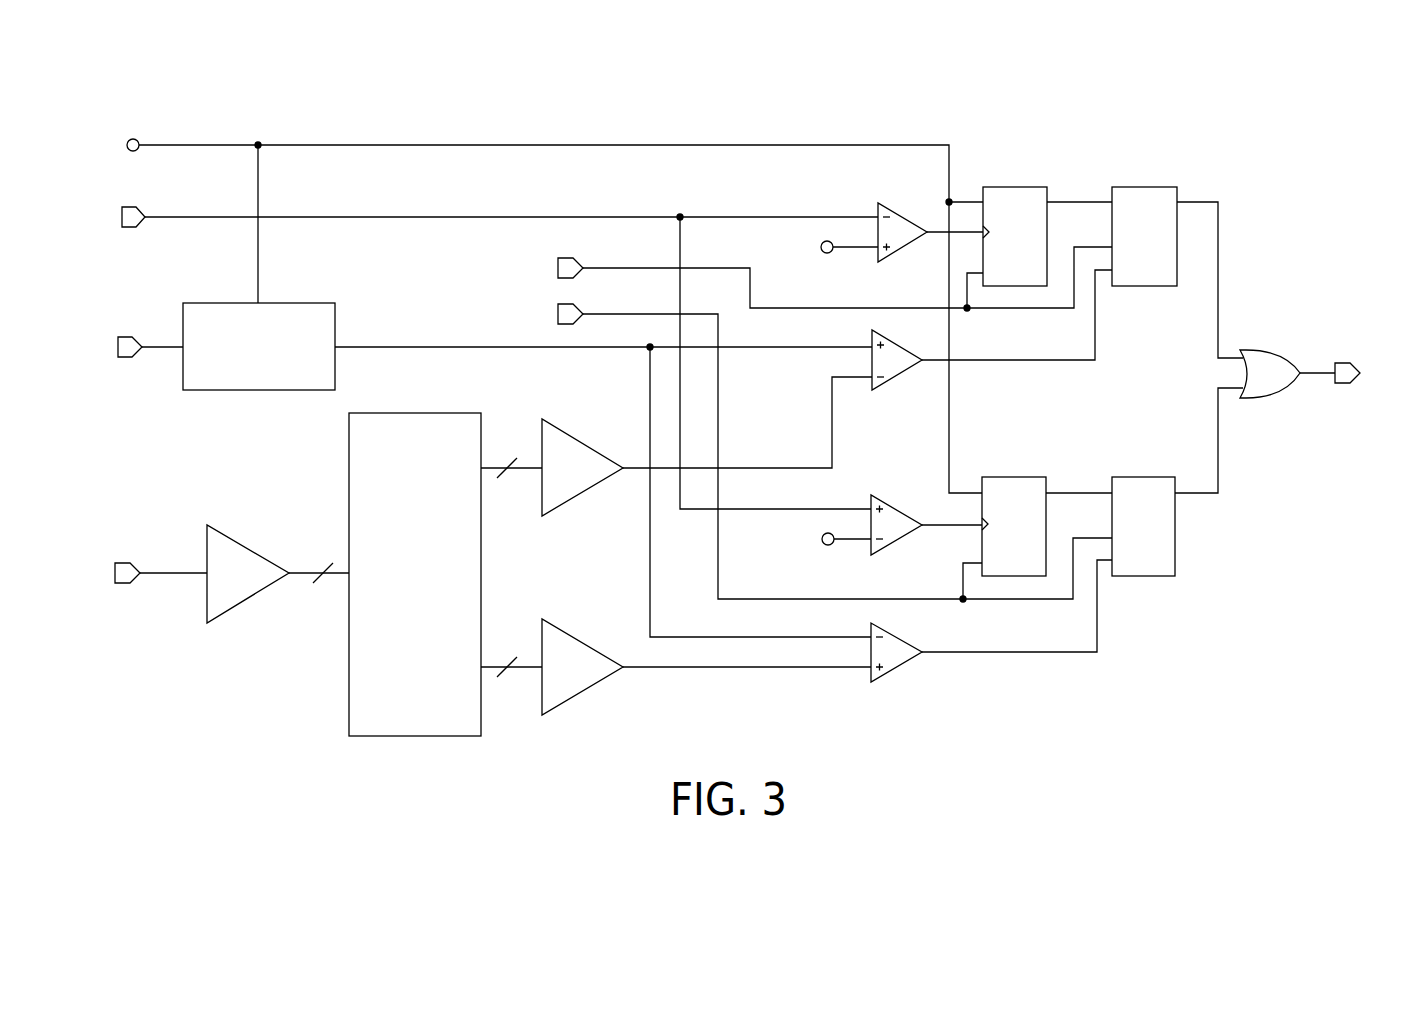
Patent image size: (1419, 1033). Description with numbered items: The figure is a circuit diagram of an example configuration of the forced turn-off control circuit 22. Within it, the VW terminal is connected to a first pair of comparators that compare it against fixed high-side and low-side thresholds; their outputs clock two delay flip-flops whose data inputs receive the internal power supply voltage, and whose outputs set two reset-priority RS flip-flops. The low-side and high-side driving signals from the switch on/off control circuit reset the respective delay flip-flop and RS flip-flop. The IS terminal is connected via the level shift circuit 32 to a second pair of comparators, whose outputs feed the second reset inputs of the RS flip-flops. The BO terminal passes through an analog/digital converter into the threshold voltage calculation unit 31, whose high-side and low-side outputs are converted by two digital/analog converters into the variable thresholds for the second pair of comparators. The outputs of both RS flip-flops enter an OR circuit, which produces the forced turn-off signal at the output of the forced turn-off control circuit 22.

The forced turn-off control circuit 22 is at (1273, 204).
The threshold voltage calculation unit 31 is at (410, 413).
The level shift circuit 32 is at (283, 302).